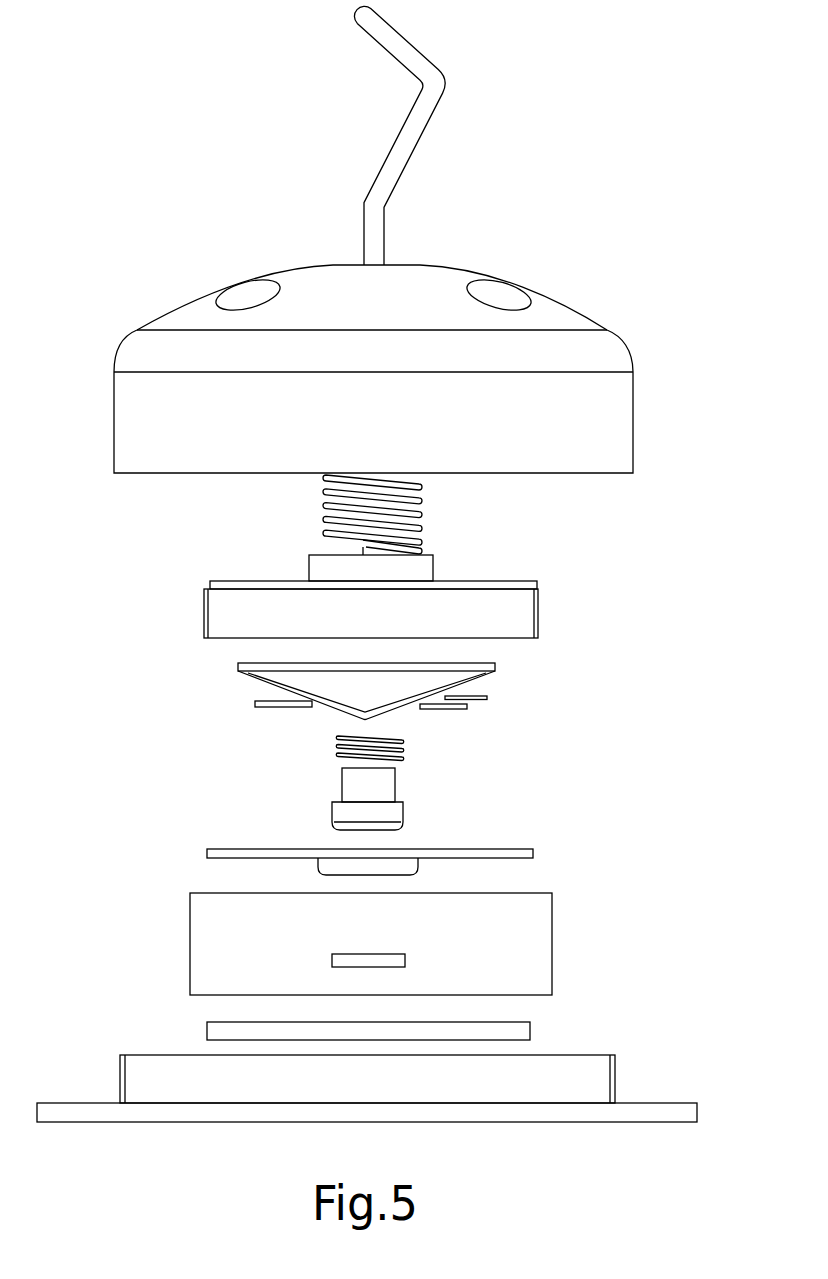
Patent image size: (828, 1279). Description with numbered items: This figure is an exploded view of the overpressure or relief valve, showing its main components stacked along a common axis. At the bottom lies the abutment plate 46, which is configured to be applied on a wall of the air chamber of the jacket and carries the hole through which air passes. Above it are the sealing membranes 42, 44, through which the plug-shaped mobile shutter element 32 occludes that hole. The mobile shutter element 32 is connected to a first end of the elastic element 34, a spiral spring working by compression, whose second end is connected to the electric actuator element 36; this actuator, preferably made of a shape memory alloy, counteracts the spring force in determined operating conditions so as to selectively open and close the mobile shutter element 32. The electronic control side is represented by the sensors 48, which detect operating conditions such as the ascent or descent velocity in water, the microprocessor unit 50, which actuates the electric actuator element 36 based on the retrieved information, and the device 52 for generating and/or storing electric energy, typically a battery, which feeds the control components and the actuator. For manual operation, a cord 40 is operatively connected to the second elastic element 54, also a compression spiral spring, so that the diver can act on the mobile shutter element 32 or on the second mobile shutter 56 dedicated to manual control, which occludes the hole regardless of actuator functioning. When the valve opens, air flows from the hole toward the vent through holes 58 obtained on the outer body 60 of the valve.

The mobile shutter element 32 is at (402, 810).
The elastic element 34 is at (403, 750).
The electric actuator element 36 is at (497, 666).
The cord 40 is at (418, 137).
The sealing membrane 42 is at (533, 853).
The sealing membrane 44 is at (528, 1032).
The abutment plate 46 is at (590, 1058).
The sensors 48 is at (487, 697).
The microprocessor unit 50 is at (467, 708).
The device for generating and/or storing electric energy 52 is at (267, 707).
The second elastic element 54 is at (420, 517).
The second mobile shutter 56 is at (548, 940).
The vent through holes 58 is at (245, 300).
The outer body 60 is at (625, 410).